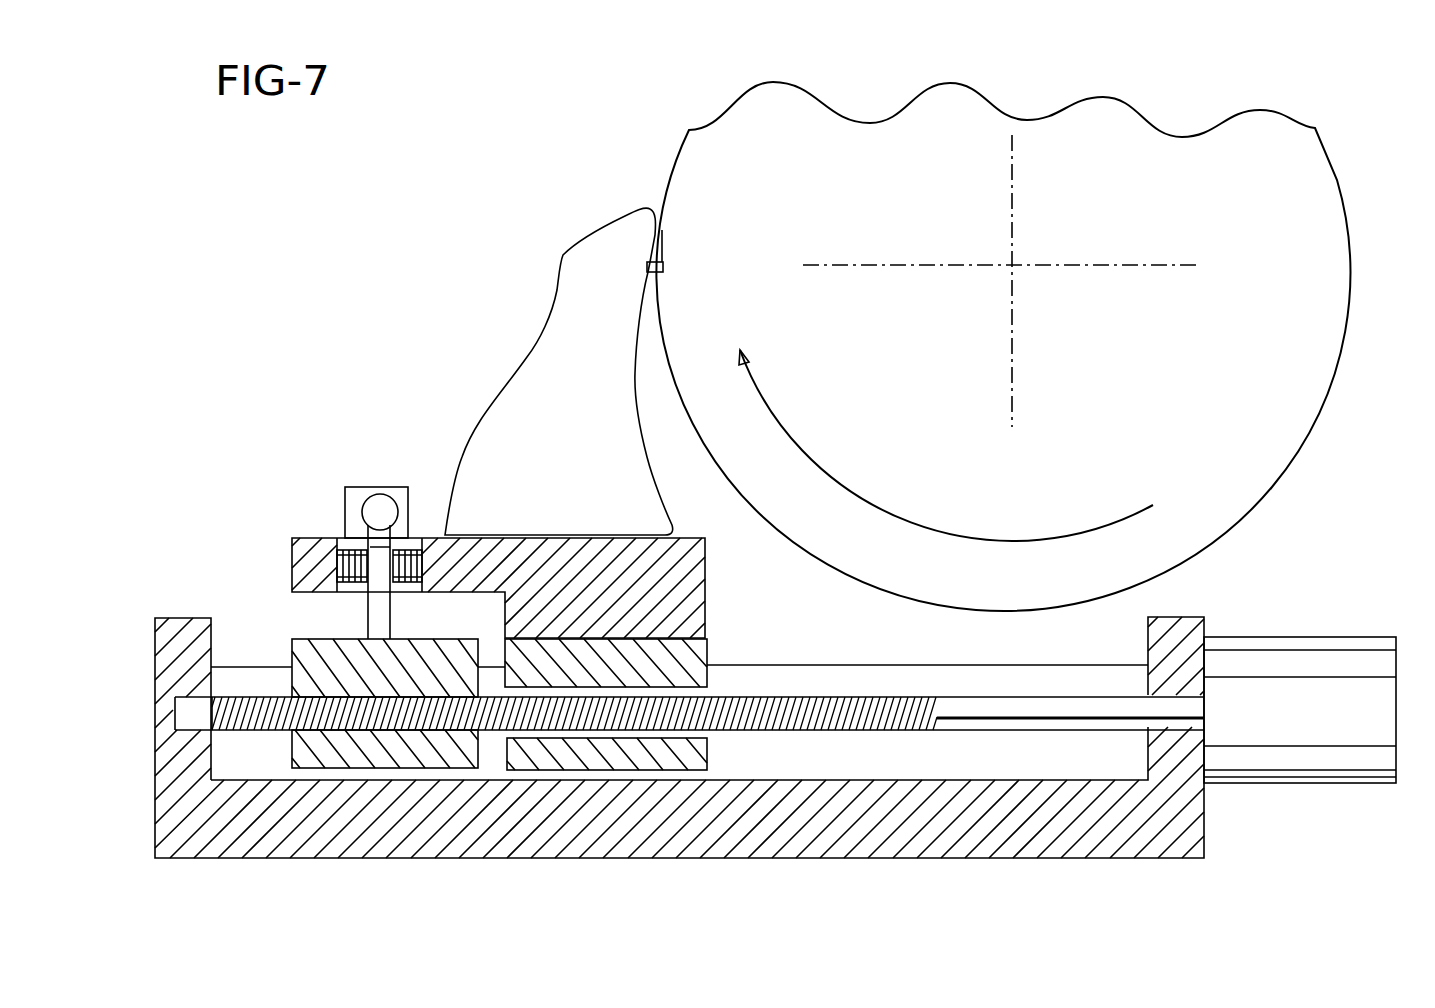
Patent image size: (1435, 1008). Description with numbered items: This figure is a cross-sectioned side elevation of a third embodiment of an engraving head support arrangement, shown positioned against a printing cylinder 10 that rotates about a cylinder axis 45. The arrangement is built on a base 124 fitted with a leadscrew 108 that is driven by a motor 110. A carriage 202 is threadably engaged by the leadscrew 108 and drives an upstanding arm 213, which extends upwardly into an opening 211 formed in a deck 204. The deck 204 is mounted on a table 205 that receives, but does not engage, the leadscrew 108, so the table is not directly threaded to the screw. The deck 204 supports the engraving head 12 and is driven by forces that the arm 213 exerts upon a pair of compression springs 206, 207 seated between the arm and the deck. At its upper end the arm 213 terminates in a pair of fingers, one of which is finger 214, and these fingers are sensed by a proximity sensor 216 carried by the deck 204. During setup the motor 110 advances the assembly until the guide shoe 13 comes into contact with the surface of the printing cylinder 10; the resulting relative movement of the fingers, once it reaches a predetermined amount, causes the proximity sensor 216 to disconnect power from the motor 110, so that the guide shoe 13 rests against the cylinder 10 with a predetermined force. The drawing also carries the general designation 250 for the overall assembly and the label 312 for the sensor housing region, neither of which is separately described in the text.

The printing cylinder 10 is at (1144, 378).
The engraving head 12 is at (555, 300).
The guide shoe 13 is at (662, 230).
The cylinder axis 45 is at (1089, 199).
The leadscrew 108 is at (689, 664).
The motor 110 is at (1273, 636).
The base 124 is at (779, 753).
The carriage 202 is at (285, 677).
The deck 204 is at (706, 580).
The table 205 is at (675, 668).
The compression spring 206 is at (343, 533).
The compression spring 207 is at (410, 536).
The opening 211 is at (340, 596).
The upstanding arm 213 is at (434, 582).
The finger 214 is at (433, 410).
The proximity sensor 216 is at (378, 493).
The probe assembly 250 is at (252, 400).
The ball housing 312 is at (350, 500).